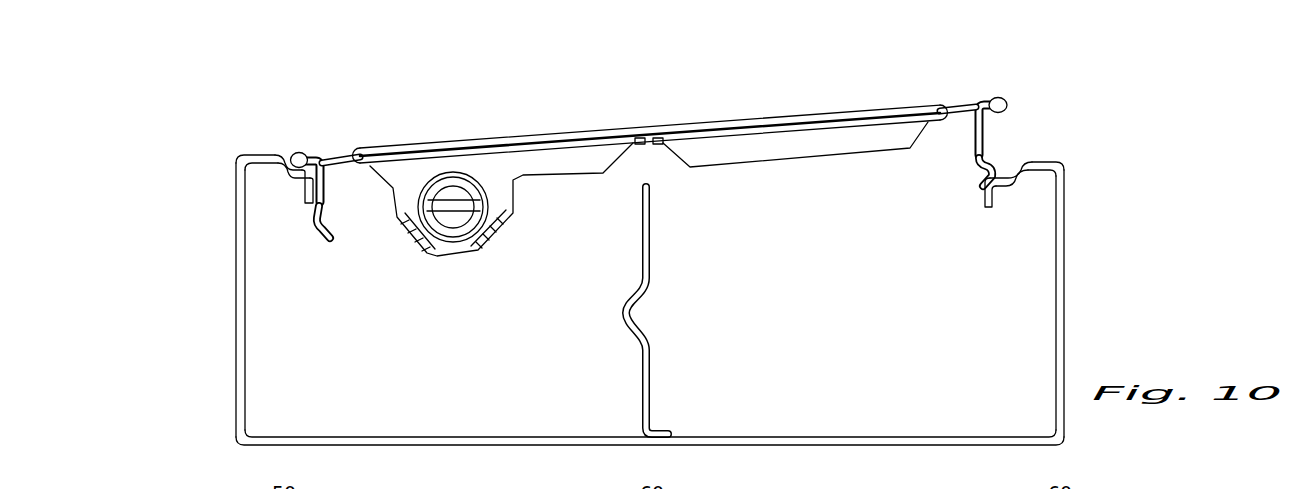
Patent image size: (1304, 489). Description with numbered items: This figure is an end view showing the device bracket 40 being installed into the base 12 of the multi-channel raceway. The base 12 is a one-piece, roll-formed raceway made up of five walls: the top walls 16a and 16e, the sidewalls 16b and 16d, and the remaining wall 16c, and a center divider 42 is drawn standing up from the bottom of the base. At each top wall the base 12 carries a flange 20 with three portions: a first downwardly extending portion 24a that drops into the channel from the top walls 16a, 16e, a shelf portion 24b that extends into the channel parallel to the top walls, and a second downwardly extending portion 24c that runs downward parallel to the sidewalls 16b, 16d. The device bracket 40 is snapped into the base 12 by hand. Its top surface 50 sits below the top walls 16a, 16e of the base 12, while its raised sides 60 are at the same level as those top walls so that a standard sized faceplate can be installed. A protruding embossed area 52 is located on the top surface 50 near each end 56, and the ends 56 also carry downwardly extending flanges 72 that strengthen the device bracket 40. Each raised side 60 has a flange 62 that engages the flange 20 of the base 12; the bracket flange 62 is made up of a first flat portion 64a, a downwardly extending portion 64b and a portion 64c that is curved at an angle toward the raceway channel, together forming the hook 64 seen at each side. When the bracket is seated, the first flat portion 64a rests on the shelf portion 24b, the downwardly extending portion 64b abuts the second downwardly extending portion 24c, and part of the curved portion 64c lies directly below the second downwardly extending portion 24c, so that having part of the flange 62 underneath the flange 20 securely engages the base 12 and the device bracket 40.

The base 12 is at (678, 285).
The top wall 16a is at (1043, 160).
The sidewall 16b is at (1067, 233).
The wall 16c is at (690, 447).
The sidewall 16d is at (232, 357).
The top wall 16e is at (257, 152).
The flange 20 is at (270, 204).
The first downwardly extending portion 24a is at (290, 168).
The shelf portion 24b is at (288, 178).
The second downwardly extending portion 24c is at (307, 185).
The device bracket 40 is at (650, 164).
The divider wall 42 is at (648, 368).
The top surface 50 is at (343, 160).
The protruding embossed area 52 is at (457, 140).
The end 56 is at (537, 135).
The raised side 60 is at (306, 150).
The flange 62 is at (1042, 101).
The hook 64 is at (983, 178).
The first flat portion 64a is at (297, 152).
The downwardly extending portion 64b is at (323, 192).
The curved portion 64c is at (318, 233).
The downwardly extending flange 72 is at (525, 170).